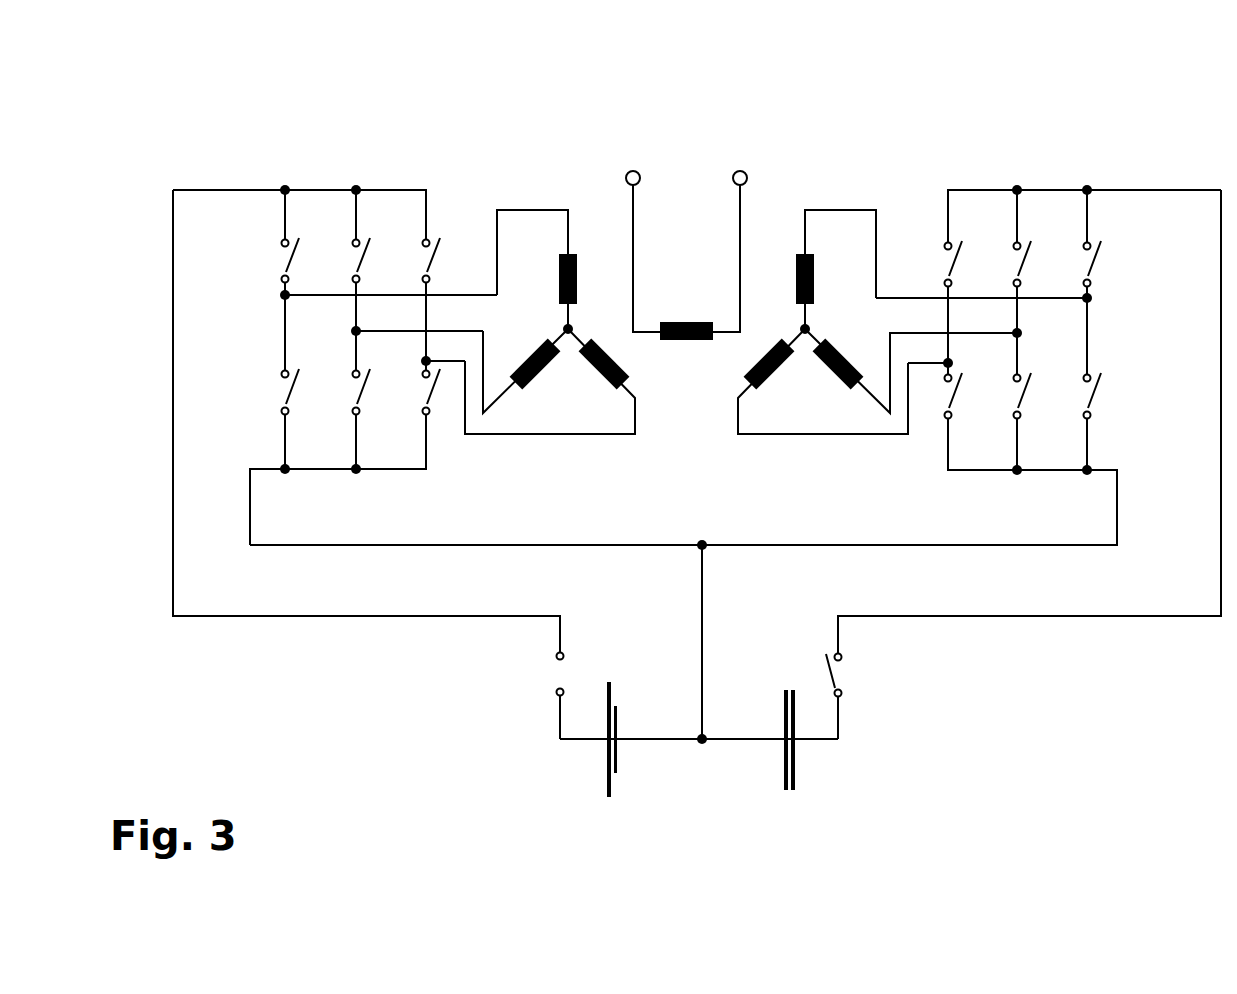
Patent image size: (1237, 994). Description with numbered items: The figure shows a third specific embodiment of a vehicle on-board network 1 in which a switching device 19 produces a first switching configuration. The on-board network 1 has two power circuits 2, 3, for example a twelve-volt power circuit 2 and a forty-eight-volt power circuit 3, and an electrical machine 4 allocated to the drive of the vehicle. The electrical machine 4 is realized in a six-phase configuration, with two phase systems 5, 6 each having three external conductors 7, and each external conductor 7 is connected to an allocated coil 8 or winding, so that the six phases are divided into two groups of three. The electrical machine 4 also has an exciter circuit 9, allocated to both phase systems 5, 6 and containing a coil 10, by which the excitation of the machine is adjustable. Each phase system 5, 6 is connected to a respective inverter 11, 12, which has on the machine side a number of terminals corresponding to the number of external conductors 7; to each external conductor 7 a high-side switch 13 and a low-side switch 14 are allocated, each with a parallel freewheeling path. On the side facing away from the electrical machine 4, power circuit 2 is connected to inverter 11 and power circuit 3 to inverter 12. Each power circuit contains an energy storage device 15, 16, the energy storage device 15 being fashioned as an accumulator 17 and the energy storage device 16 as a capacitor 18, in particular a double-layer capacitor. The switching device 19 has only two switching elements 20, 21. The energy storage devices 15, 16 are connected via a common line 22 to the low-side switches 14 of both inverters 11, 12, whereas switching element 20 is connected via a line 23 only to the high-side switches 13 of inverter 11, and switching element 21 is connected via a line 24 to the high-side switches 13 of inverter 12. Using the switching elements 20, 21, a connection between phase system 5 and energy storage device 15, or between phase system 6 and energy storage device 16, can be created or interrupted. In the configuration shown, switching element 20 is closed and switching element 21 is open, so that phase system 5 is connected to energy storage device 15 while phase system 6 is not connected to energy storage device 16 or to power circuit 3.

The on-board network 1 is at (835, 102).
The power circuit 2 is at (648, 773).
The power circuit 3 is at (869, 777).
The electrical machine 4 is at (665, 287).
The phase system 5 is at (665, 307).
The phase system 6 is at (795, 150).
The external conductor 7 is at (530, 190).
The coil 8 is at (573, 255).
The exciter circuit 9 is at (680, 158).
The coil 10 is at (682, 322).
The inverter 11 is at (356, 128).
The inverter 12 is at (1070, 160).
The high-side switch 13 is at (277, 258).
The low-side switch 14 is at (289, 390).
The energy storage device 15 is at (620, 748).
The energy storage device 16 is at (800, 745).
The accumulator 17 is at (606, 783).
The capacitor 18 is at (800, 792).
The switching device 19 is at (922, 697).
The switching element 20 is at (558, 675).
The switching element 21 is at (840, 677).
The common line 22 is at (702, 611).
The line 23 is at (355, 618).
The line 24 is at (1110, 618).